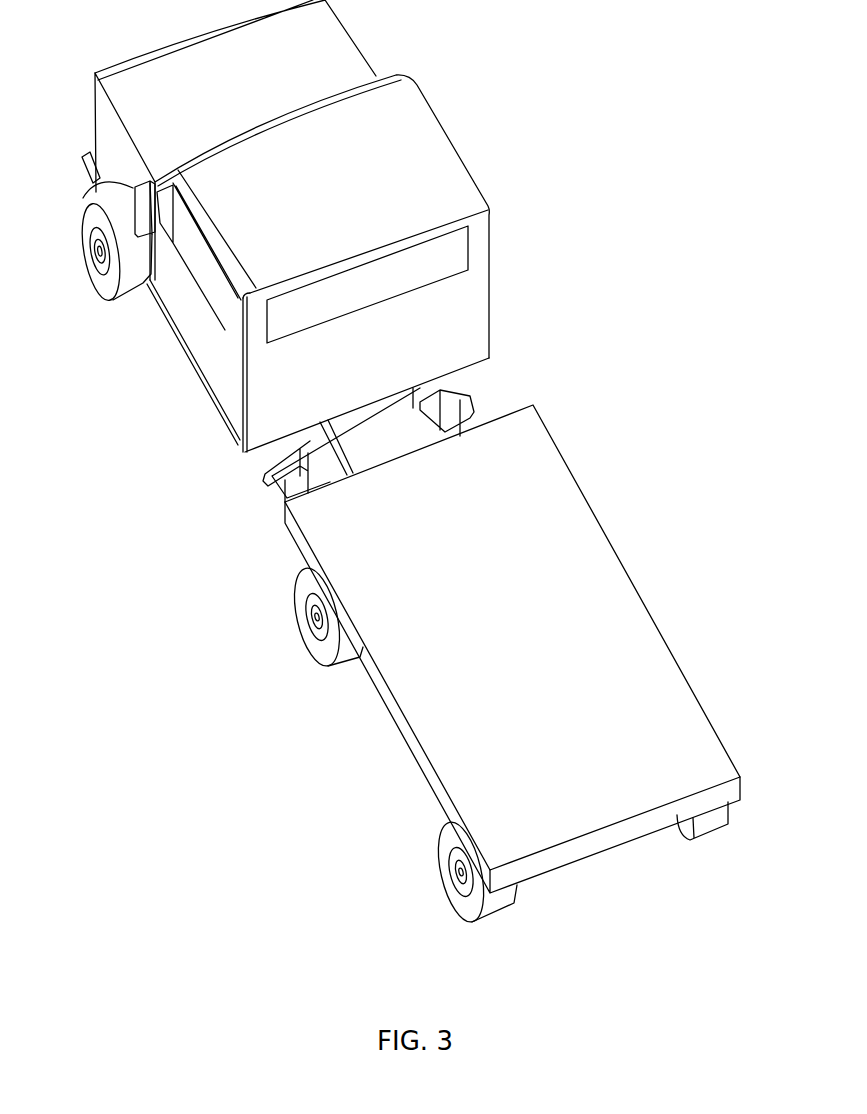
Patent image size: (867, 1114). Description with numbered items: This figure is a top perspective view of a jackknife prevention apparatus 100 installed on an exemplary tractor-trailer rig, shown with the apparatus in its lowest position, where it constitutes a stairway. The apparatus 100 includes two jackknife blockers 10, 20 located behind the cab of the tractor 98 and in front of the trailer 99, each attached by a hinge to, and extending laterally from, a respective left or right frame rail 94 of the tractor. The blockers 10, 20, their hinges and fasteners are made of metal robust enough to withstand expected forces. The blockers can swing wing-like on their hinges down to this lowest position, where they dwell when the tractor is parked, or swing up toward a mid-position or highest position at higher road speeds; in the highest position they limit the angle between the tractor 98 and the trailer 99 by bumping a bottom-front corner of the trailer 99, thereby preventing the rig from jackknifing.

The jackknife blocker 10 is at (258, 510).
The jackknife blocker 20 is at (493, 400).
The frame 94 is at (360, 433).
The tractor 98 is at (427, 148).
The trailer 99 is at (578, 537).
The jackknife prevention apparatus 100 is at (507, 377).